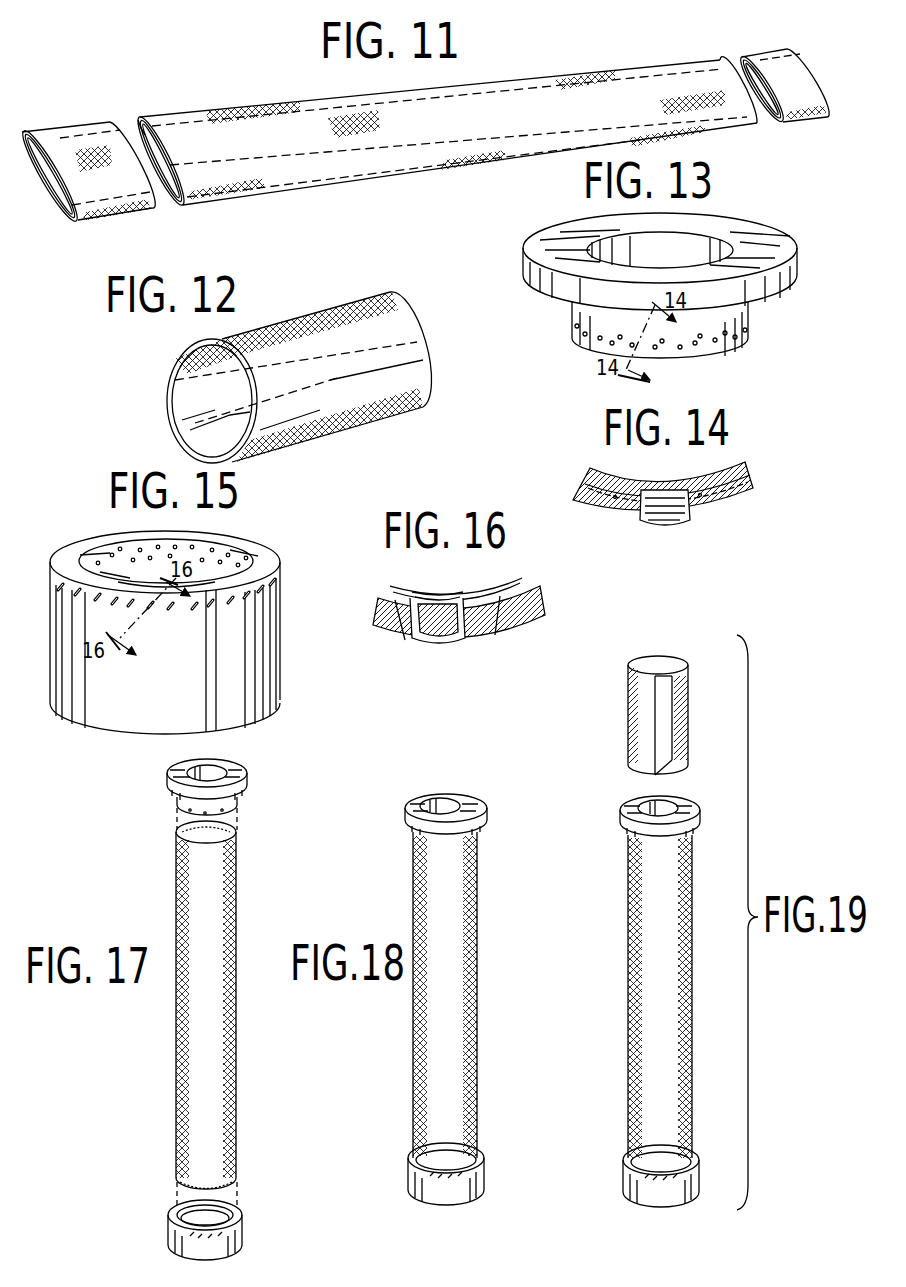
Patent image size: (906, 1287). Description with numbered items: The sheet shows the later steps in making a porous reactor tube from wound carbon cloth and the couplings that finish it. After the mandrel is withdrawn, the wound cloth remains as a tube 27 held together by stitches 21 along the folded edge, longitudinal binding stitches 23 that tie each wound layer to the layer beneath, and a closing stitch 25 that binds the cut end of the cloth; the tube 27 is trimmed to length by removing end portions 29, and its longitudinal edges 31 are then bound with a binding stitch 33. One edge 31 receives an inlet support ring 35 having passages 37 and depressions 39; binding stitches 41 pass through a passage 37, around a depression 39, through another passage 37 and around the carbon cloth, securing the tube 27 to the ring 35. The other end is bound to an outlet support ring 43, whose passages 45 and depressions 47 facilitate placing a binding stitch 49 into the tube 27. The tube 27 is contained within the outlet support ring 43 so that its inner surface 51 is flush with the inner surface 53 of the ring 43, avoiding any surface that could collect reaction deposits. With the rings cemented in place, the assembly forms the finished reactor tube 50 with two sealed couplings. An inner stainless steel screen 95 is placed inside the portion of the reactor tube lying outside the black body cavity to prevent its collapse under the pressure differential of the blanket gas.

In FIG. 12, the stitches 21 is at (185, 432).
In FIG. 11, the binding stitches 23 is at (535, 85).
In FIG. 12, the binding stitches 23 is at (348, 305).
In FIG. 11, the closing stitch 25 is at (475, 135).
In FIG. 12, the closing stitch 25 is at (362, 365).
In FIG. 11, the tube 27 is at (267, 93).
In FIG. 12, the tube 27 is at (405, 300).
In FIG. 14, the tube 27 is at (580, 504).
In FIG. 16, the tube 27 is at (522, 583).
In FIG. 17, the tube 27 is at (175, 1038).
In FIG. 11, the end portions 29 is at (95, 200).
In FIG. 11, the longitudinal edges 31 is at (137, 125).
In FIG. 12, the binding stitch 33 is at (182, 418).
In FIG. 13, the inlet support ring 35 is at (785, 232).
In FIG. 14, the inlet support ring 35 is at (750, 476).
In FIG. 17, the inlet support ring 35 is at (246, 768).
In FIG. 18, the inlet support ring 35 is at (478, 796).
In FIG. 19, the inlet support ring 35 is at (618, 818).
In FIG. 13, the passages 37 is at (578, 334).
In FIG. 14, the passages 37 is at (630, 508).
In FIG. 17, the passages 37 is at (222, 800).
In FIG. 14, the depressions 39 is at (655, 492).
In FIG. 14, the binding stitches 41 is at (667, 524).
In FIG. 15, the outlet support ring 43 is at (75, 696).
In FIG. 16, the outlet support ring 43 is at (535, 606).
In FIG. 17, the outlet support ring 43 is at (247, 1232).
In FIG. 18, the outlet support ring 43 is at (470, 1200).
In FIG. 19, the outlet support ring 43 is at (660, 1202).
In FIG. 15, the passages 45 is at (250, 555).
In FIG. 16, the passages 45 is at (395, 635).
In FIG. 15, the depressions 47 is at (175, 612).
In FIG. 16, the depressions 47 is at (428, 638).
In FIG. 17, the depressions 47 is at (175, 1233).
In FIG. 16, the binding stitch 49 is at (443, 595).
In FIG. 18, the binding stitch 49 is at (408, 1170).
In FIG. 18, the finished reactor tube 50 is at (452, 1005).
In FIG. 19, the finished reactor tube 50 is at (629, 1019).
In FIG. 12, the inner surface 51 is at (188, 395).
In FIG. 17, the inner surface 51 is at (178, 836).
In FIG. 15, the inner surface 53 is at (108, 578).
In FIG. 17, the inner surface 53 is at (212, 1217).
In FIG. 19, the inner stainless steel screen 95 is at (690, 724).